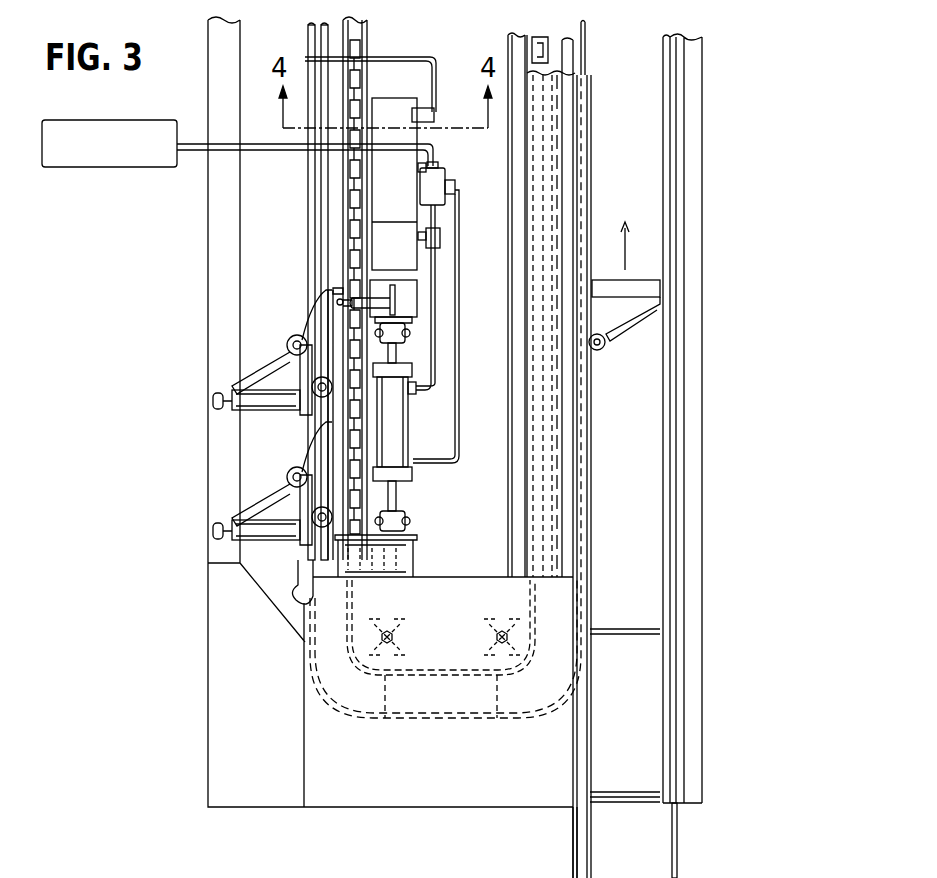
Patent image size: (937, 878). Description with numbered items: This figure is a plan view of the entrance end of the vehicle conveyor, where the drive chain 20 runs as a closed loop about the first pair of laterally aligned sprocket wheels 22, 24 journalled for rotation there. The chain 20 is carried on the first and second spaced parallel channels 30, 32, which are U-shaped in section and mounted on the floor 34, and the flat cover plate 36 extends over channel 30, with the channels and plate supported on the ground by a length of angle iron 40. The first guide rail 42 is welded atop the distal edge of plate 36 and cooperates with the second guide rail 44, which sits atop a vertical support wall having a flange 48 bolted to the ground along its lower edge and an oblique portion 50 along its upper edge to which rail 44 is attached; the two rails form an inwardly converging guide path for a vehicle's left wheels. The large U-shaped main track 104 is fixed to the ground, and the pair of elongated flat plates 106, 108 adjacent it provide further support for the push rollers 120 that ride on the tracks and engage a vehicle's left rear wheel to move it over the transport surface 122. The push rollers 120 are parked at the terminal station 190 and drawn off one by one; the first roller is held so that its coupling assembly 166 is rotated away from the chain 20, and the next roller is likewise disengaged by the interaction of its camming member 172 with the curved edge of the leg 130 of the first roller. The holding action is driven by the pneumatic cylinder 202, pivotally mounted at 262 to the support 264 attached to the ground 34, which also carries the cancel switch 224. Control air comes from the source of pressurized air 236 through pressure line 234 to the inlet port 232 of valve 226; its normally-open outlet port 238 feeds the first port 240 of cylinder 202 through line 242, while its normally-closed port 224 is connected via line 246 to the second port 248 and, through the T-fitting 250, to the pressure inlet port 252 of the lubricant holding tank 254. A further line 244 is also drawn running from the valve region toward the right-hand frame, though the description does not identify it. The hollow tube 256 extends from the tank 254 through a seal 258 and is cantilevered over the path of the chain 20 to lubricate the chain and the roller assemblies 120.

The drive chain 20 is at (348, 213).
The sprocket wheel 22 is at (382, 718).
The sprocket wheel 24 is at (497, 718).
The channel 30 is at (530, 160).
The channel 32 is at (343, 247).
The floor 34 is at (497, 270).
The cover plate 36 is at (556, 343).
The angle iron 40 is at (512, 425).
The first guide rail 42 is at (573, 858).
The second guide rail 44 is at (678, 852).
The flange 48 is at (690, 510).
The oblique portion 50 is at (678, 452).
The main track 104 is at (321, 193).
The flat plate 106 is at (308, 172).
The flat plate 108 is at (574, 52).
The push roller 120 is at (262, 363).
The transport surface 122 is at (758, 344).
The leg 130 is at (316, 462).
The coupling assembly 166 is at (296, 588).
The camming member 172 is at (310, 413).
The terminal station 190 is at (284, 449).
The pneumatic cylinder 202 is at (414, 463).
The normally-closed port 224 is at (340, 290).
The valve 226 is at (418, 168).
The inlet port 232 is at (437, 165).
The pressure line 234 is at (196, 152).
The source of pressurized air 236 is at (98, 120).
The normally-open outlet port 238 is at (449, 191).
The first port 240 is at (413, 472).
The line 242 is at (457, 443).
The air line 244 is at (442, 212).
The line 246 is at (418, 318).
The second port 248 is at (417, 389).
The T-fitting 250 is at (441, 239).
The pressure inlet port 252 is at (421, 252).
The lubricant holding tank 254 is at (410, 210).
The hollow tube 256 is at (393, 57).
The seal 258 is at (422, 108).
The pivotal mounting 262 is at (408, 340).
The support 264 is at (420, 293).